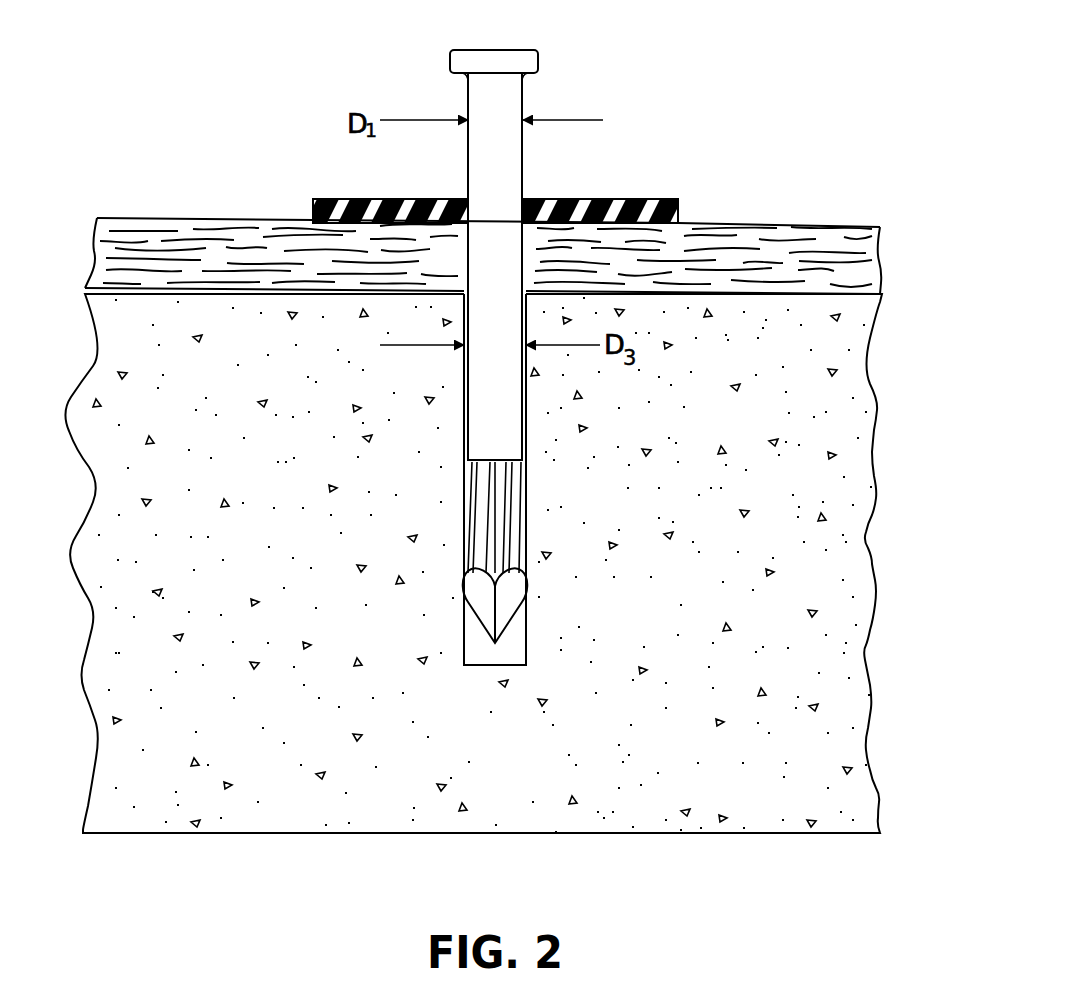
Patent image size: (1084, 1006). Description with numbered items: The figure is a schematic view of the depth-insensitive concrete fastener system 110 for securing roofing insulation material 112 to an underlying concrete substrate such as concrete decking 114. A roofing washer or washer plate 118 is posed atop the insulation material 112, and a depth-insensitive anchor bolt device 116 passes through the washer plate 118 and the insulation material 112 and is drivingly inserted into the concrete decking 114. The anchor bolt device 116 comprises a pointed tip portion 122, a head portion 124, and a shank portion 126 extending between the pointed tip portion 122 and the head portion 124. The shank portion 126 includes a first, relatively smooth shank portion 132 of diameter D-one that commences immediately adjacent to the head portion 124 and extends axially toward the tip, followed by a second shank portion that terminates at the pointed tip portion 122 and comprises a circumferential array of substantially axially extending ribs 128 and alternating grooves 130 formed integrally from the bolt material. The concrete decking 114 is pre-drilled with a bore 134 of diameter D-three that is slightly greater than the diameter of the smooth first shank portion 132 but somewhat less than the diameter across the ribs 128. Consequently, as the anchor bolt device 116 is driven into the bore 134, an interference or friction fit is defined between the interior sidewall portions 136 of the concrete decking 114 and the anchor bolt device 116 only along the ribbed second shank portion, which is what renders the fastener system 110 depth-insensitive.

The concrete fastener system 110 is at (747, 128).
The roofing insulation material 112 is at (734, 257).
The concrete decking 114 is at (852, 709).
The depth-insensitive anchor bolt device 116 is at (528, 258).
The washer plate 118 is at (588, 211).
The pointed tip portion 122 is at (512, 605).
The head portion 124 is at (522, 57).
The shank portion 126 is at (467, 272).
The ribs 128 is at (497, 517).
The grooves 130 is at (487, 497).
The first shank portion 132 is at (513, 193).
The bore 134 is at (515, 658).
The interior sidewall portions 136 is at (465, 650).